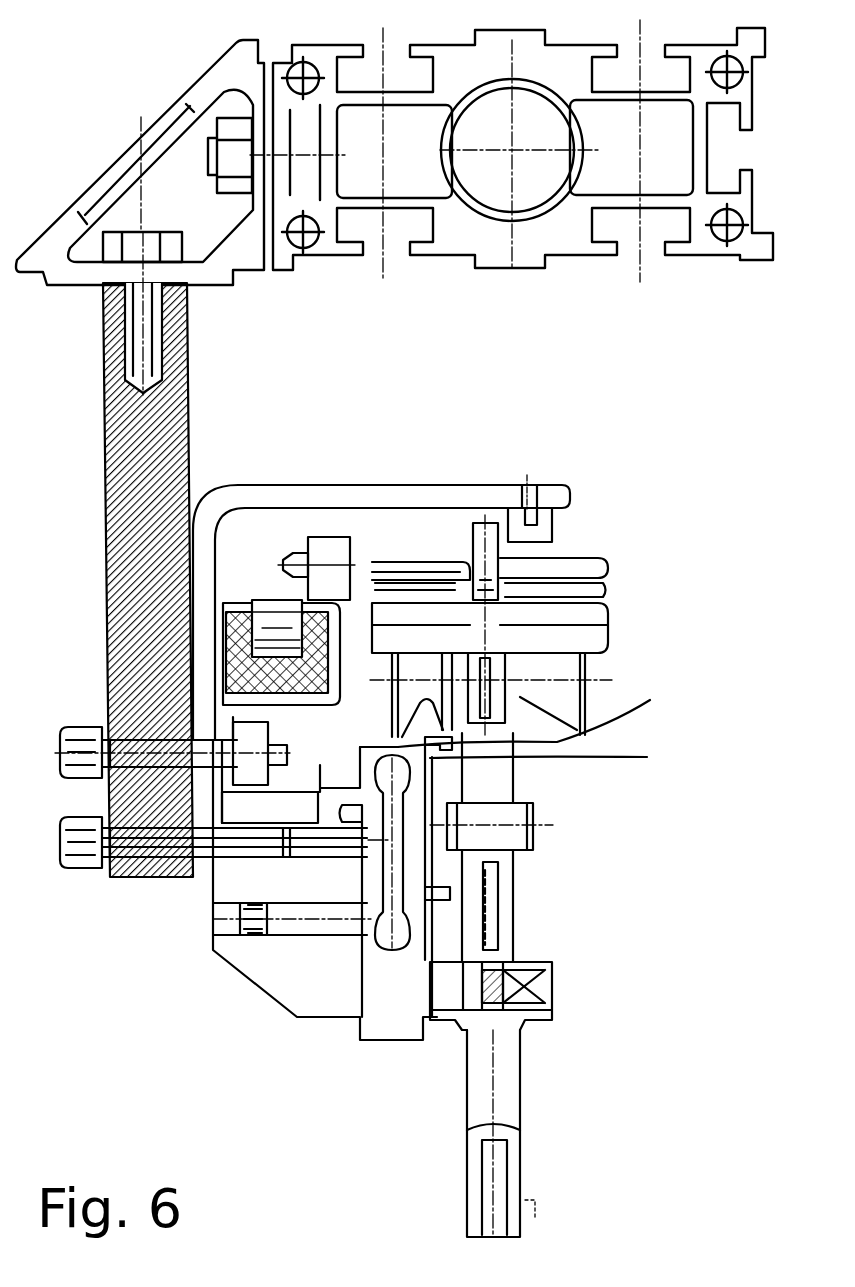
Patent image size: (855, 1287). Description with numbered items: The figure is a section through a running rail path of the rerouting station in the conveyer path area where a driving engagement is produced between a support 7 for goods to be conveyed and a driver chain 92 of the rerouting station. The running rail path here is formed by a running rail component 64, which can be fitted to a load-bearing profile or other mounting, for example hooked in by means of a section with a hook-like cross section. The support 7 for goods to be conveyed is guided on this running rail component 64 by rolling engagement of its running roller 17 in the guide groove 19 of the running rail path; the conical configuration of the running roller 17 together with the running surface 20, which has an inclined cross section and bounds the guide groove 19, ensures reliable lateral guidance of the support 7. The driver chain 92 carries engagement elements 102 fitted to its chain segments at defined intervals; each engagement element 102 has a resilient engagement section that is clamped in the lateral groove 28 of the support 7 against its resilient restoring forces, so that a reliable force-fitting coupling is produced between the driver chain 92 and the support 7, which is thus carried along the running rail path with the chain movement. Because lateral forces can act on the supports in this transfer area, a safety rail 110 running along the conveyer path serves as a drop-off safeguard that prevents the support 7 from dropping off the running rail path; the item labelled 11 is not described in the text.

The support for goods to be conveyed 7 is at (535, 955).
The housing cover 11 is at (353, 502).
The running roller 17 is at (403, 683).
The guide groove 19 is at (647, 757).
The running surface 20 is at (650, 700).
The lateral groove 28 is at (470, 572).
The running rail component 64 is at (420, 947).
The driver chain 92 is at (270, 597).
The engagement element 102 is at (390, 560).
The safety rail 110 is at (527, 520).